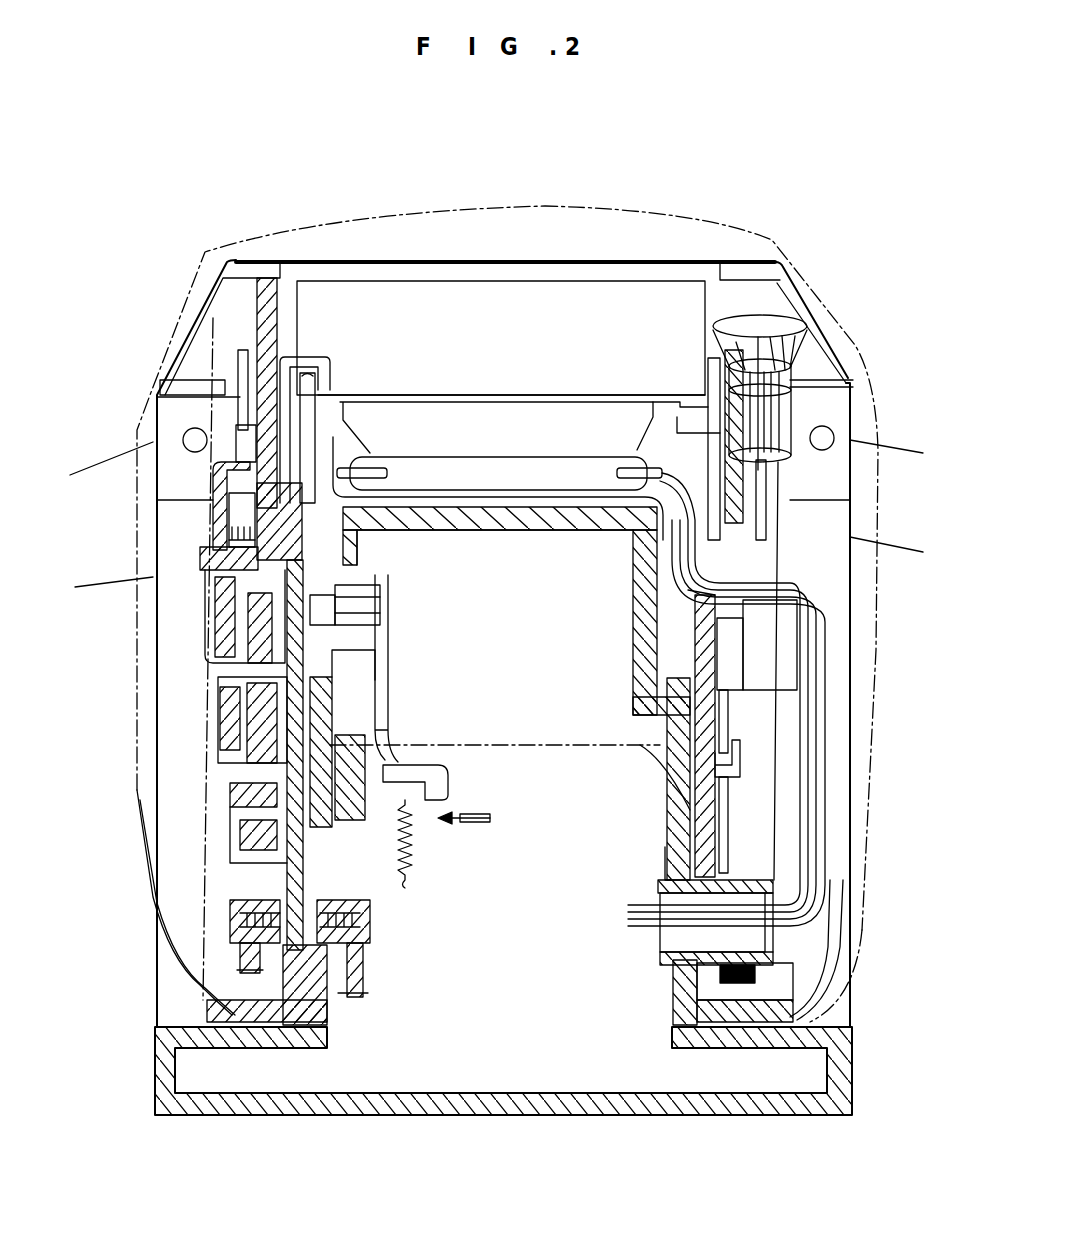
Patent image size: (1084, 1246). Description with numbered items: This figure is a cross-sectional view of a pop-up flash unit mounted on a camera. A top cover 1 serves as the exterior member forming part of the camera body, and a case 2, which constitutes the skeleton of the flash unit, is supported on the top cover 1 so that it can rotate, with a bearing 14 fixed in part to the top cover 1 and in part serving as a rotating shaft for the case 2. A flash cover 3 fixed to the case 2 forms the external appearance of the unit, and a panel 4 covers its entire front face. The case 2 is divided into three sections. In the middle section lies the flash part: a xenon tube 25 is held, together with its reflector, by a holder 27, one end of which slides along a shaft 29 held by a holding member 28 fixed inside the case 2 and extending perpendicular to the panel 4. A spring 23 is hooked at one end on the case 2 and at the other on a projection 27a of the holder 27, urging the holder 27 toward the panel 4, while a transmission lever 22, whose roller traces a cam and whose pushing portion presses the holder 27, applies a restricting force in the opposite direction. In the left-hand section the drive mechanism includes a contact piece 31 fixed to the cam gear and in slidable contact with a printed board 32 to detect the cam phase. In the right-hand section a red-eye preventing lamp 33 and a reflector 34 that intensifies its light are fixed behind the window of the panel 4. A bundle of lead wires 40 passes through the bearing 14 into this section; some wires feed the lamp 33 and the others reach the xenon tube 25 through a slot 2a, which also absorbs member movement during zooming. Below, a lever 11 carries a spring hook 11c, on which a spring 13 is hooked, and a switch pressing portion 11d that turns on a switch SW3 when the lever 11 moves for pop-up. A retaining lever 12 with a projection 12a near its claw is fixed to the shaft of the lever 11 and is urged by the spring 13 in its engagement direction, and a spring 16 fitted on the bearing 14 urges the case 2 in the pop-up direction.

The top cover 1 is at (832, 1108).
The case 2 is at (230, 1015).
The slot 2a is at (700, 597).
The flash cover 3 is at (700, 216).
The panel 4 is at (547, 310).
The lever 11 is at (380, 678).
The spring hook 11c is at (415, 805).
The switch pressing portion 11d is at (442, 790).
The retaining lever 12 is at (345, 593).
The projection 12a is at (325, 615).
The spring 13 is at (406, 883).
The bearing 14 is at (772, 942).
The spring 16 is at (752, 875).
The transmission lever 22 is at (237, 364).
The spring 23 is at (225, 510).
The xenon tube 25 is at (567, 470).
The holder 27 is at (670, 412).
The projection 27a is at (240, 436).
The holding member 28 is at (307, 355).
The shaft 29 is at (325, 380).
The contact piece 31 is at (220, 660).
The printed board 32 is at (222, 720).
The red-eye preventing lamp 33 is at (760, 418).
The reflector 34 is at (765, 336).
The lead wires 40 is at (830, 730).
The switch SW3 is at (488, 828).